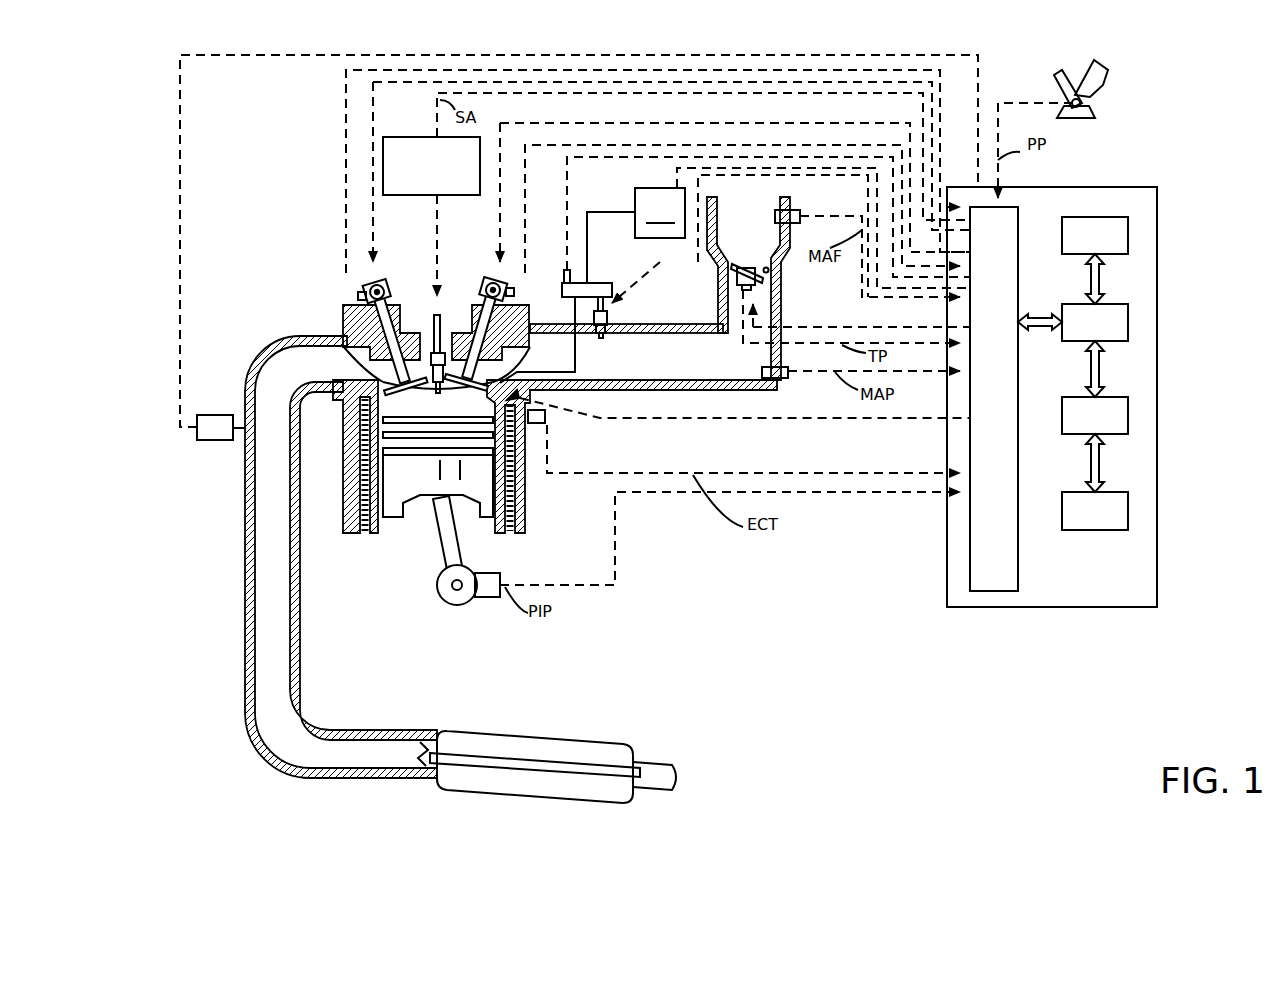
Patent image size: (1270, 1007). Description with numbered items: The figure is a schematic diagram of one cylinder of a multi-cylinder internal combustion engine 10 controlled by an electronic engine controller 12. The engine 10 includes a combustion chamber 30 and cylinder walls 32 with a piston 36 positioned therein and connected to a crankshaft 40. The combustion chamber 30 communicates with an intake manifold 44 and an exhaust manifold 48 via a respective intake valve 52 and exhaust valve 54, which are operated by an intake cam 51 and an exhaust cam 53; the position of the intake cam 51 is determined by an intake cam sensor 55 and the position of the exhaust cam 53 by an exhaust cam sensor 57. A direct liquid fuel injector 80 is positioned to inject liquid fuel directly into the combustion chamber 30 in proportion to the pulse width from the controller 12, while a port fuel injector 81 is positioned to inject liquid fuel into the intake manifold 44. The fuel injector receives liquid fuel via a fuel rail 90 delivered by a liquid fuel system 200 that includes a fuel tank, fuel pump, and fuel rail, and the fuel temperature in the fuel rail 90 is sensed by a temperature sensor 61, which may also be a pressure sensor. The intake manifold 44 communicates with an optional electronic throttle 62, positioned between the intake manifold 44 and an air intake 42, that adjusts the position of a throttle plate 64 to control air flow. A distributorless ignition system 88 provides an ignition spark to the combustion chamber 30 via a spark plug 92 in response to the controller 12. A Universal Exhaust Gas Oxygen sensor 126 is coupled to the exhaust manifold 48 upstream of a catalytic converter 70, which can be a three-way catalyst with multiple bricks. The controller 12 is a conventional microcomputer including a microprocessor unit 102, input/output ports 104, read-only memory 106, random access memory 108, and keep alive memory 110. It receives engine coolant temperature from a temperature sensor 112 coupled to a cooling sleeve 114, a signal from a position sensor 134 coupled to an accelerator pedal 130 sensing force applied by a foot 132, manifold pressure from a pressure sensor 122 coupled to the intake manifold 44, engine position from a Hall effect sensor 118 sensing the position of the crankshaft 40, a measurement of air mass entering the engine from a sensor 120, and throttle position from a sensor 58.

The internal combustion engine 10 is at (280, 260).
The electronic engine controller 12 is at (1150, 187).
The combustion chamber 30 is at (432, 405).
The cylinder walls 32 is at (383, 530).
The piston 36 is at (422, 490).
The crankshaft 40 is at (447, 603).
The air intake 42 is at (758, 241).
The intake manifold 44 is at (698, 369).
The exhaust manifold 48 is at (325, 372).
The intake cam 51 is at (490, 290).
The intake valve 52 is at (485, 378).
The exhaust cam 53 is at (378, 275).
The exhaust valve 54 is at (343, 333).
The intake cam sensor 55 is at (515, 293).
The exhaust cam sensor 57 is at (362, 297).
The throttle position sensor 58 is at (747, 289).
The temperature sensor 61 is at (567, 270).
The electronic throttle 62 is at (767, 268).
The throttle plate 64 is at (733, 267).
The catalytic converter 70 is at (460, 730).
The direct liquid fuel injector 80 is at (535, 402).
The port fuel injector 81 is at (605, 338).
The distributorless ignition system 88 is at (407, 137).
The fuel rail 90 is at (599, 283).
The spark plug 92 is at (433, 333).
The microprocessor unit 102 is at (1128, 320).
The input/output ports 104 is at (1018, 217).
The read-only memory 106 is at (1128, 230).
The random access memory 108 is at (1128, 415).
The keep alive memory 110 is at (1128, 510).
The temperature sensor 112 is at (545, 427).
The cooling sleeve 114 is at (512, 495).
The Hall effect sensor 118 is at (483, 600).
The air mass sensor 120 is at (792, 208).
The pressure sensor 122 is at (775, 380).
The Universal Exhaust Gas Oxygen (UEGO) sensor 126 is at (197, 438).
The accelerator pedal 130 is at (1060, 85).
The foot 132 is at (1098, 72).
The position sensor 134 is at (1095, 106).
The liquid fuel system 200 is at (660, 213).